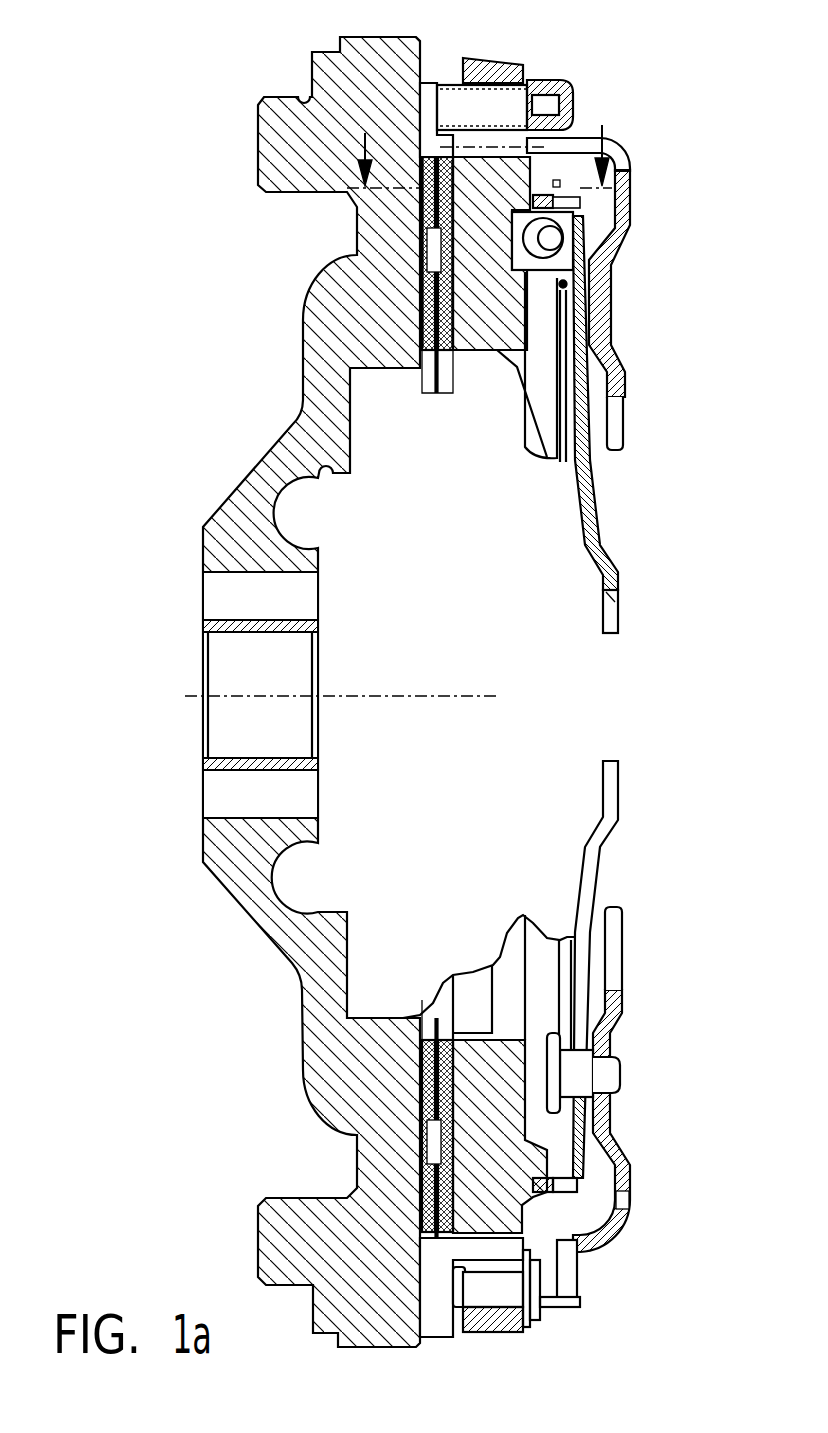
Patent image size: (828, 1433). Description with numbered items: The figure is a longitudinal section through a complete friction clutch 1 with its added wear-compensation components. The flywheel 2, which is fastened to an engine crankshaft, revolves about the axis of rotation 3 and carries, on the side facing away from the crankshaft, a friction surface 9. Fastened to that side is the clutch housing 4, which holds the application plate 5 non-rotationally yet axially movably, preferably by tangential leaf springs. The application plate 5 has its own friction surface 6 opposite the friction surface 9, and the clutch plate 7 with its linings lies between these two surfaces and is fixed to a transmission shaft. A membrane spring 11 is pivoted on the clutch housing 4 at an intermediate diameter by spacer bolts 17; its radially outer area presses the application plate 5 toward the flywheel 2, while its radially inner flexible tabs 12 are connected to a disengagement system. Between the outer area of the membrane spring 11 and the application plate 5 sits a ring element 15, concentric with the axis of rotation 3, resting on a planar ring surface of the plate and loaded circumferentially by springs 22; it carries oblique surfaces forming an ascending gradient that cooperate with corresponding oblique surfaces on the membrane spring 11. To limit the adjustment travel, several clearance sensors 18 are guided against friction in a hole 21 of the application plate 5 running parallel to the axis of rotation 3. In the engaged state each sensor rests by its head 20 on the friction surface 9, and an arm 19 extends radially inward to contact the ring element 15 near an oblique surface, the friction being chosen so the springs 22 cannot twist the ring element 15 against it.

The friction clutch 1 is at (232, 76).
The flywheel 2 is at (277, 146).
The axis of rotation 3 is at (462, 700).
The clutch housing 4 is at (615, 385).
The application plate 5 is at (476, 372).
The friction surface 6 is at (446, 375).
The clutch plate 7 is at (415, 398).
The friction surface 9 is at (430, 84).
The membrane spring 11 is at (585, 310).
The flexible tabs 12 is at (590, 528).
The ring element 15 is at (632, 202).
The spacer bolts 17 is at (600, 1078).
The clearance sensors 18 is at (552, 82).
The arm 19 is at (543, 157).
The head 20 is at (440, 90).
The hole 21 is at (527, 80).
The springs 22 is at (556, 243).